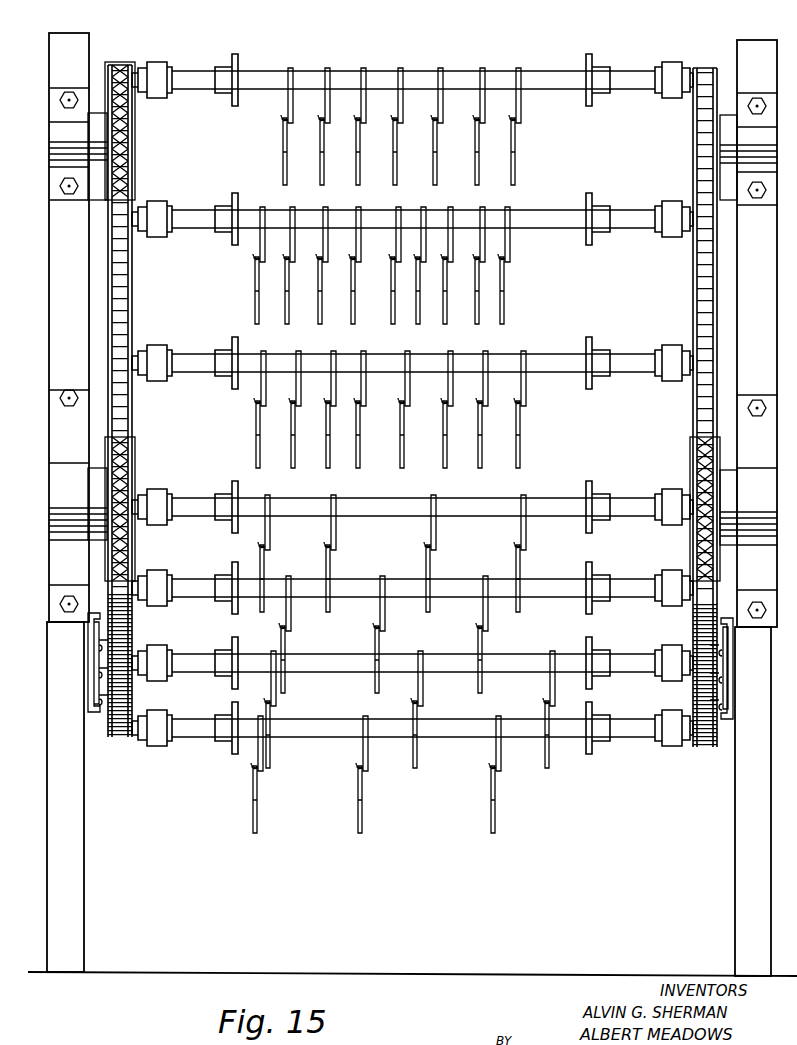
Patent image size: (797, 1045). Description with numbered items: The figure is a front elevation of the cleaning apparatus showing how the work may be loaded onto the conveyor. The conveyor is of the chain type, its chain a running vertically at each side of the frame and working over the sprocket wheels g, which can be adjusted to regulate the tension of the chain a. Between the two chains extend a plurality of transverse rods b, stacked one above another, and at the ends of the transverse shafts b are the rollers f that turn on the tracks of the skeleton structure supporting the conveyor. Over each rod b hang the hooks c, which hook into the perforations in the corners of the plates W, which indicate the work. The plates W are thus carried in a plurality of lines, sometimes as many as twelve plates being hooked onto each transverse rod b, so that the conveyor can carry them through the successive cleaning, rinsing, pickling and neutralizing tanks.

The chain a is at (133, 65).
The transverse rod b is at (278, 72).
The hook c is at (516, 97).
The roller f is at (160, 66).
The sprocket wheel g is at (124, 146).
The work plate W is at (393, 180).